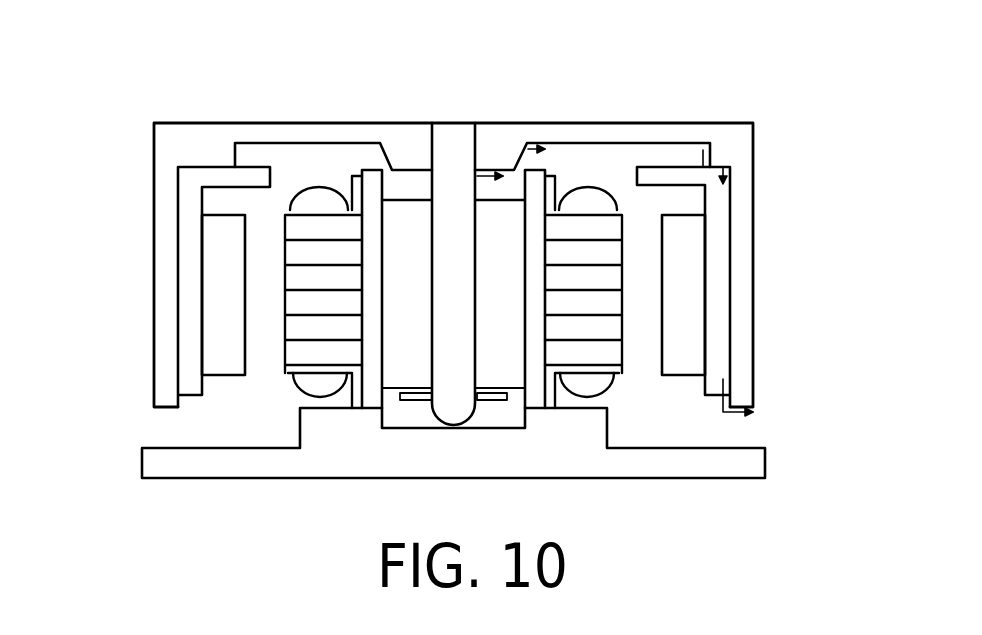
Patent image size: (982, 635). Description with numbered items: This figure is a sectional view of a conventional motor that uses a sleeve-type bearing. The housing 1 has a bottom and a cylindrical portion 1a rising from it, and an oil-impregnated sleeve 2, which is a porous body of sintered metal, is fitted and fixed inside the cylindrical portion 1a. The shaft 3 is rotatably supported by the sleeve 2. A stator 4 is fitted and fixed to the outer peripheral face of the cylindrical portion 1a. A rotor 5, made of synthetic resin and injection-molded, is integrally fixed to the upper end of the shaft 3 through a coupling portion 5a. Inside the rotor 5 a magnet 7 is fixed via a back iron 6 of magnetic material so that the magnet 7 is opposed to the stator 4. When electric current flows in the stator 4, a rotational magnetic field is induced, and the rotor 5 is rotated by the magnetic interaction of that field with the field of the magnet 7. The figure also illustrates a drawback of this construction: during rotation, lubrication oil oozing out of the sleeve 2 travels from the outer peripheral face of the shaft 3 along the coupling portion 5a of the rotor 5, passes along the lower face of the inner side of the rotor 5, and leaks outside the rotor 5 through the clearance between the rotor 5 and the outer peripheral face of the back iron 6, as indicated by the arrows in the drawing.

The housing 1 is at (197, 460).
The cylindrical portion 1a is at (535, 188).
The sleeve 2 is at (486, 212).
The shaft 3 is at (452, 153).
The stator 4 is at (285, 233).
The rotor 5 is at (734, 145).
The coupling portion 5a is at (403, 163).
The back iron 6 is at (718, 250).
The magnet 7 is at (690, 320).